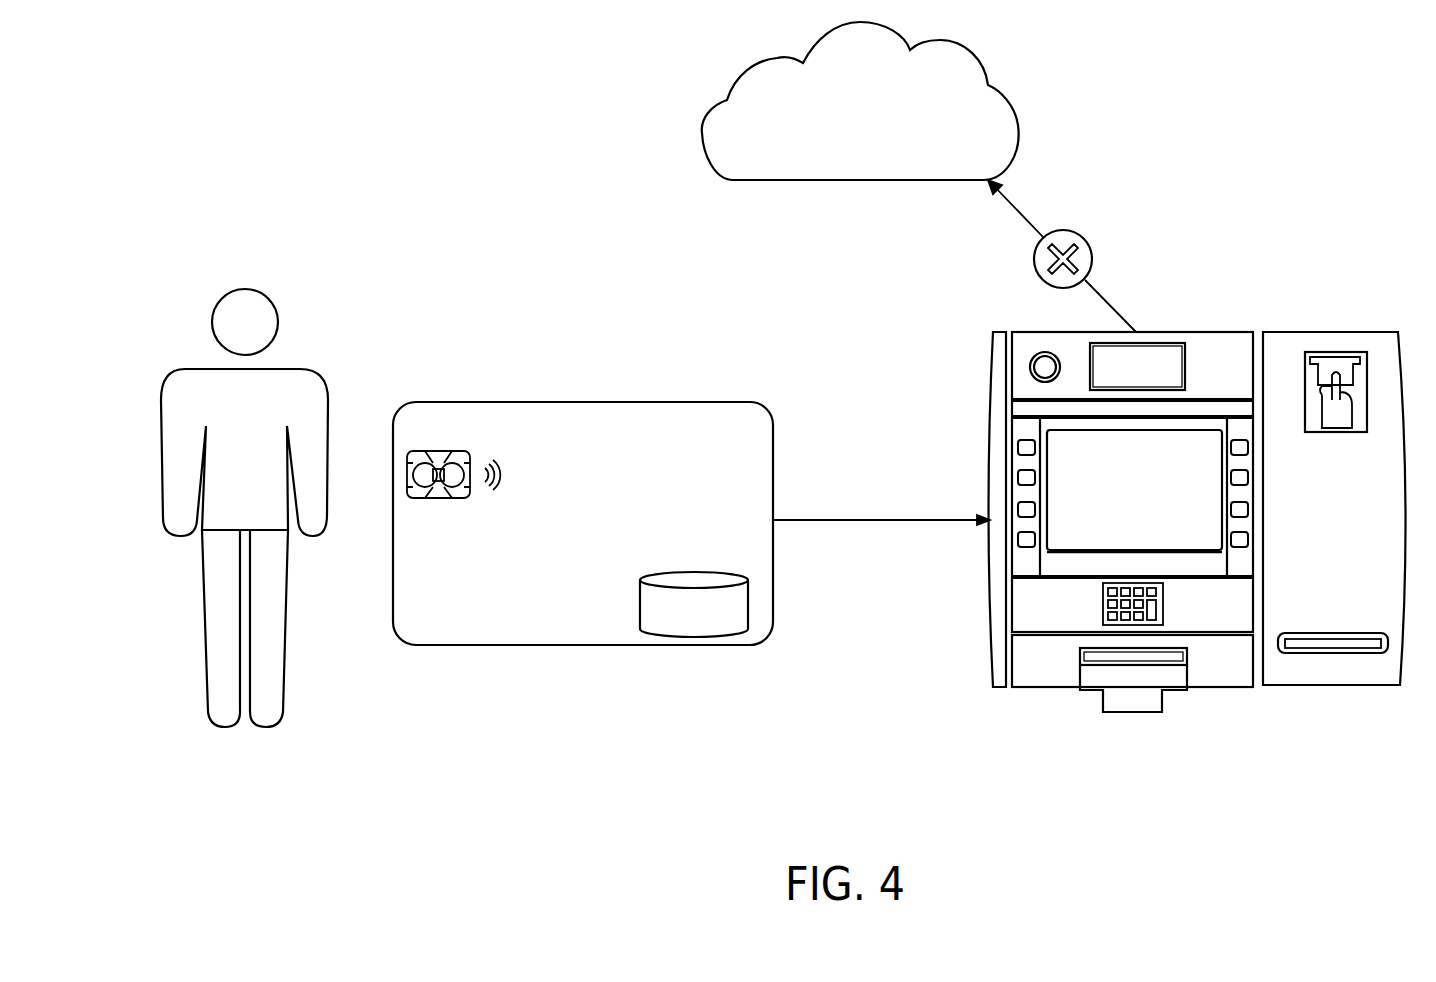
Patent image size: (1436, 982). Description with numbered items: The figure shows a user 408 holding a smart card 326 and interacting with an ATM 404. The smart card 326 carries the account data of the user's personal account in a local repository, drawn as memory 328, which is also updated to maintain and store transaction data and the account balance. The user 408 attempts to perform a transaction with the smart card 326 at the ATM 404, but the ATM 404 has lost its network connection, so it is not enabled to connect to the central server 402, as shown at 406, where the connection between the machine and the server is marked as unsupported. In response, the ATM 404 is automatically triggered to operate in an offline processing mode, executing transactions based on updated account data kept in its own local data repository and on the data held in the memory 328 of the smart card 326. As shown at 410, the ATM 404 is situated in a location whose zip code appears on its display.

The smart card 326 is at (619, 509).
The memory 328 is at (748, 608).
The central server 402 is at (702, 143).
The ATM 404 is at (1197, 496).
The lost network connection indicator 406 is at (1092, 259).
The user 408 is at (310, 387).
The ATM location indication 410 is at (1160, 338).